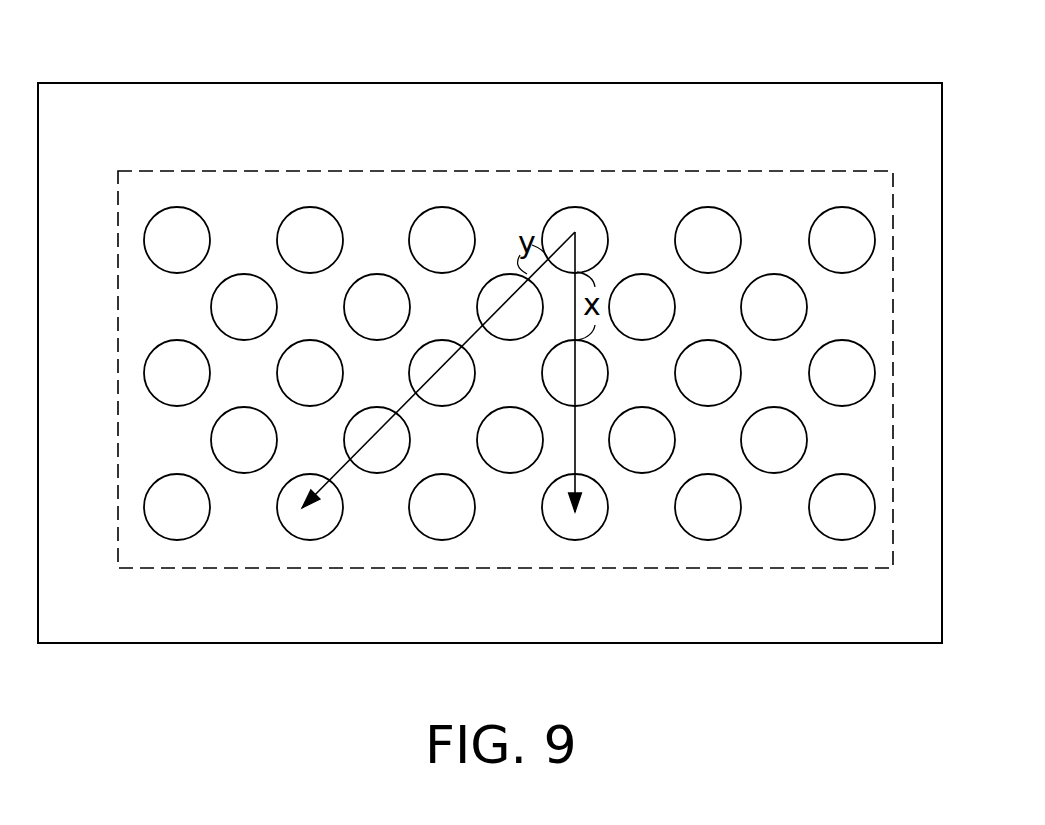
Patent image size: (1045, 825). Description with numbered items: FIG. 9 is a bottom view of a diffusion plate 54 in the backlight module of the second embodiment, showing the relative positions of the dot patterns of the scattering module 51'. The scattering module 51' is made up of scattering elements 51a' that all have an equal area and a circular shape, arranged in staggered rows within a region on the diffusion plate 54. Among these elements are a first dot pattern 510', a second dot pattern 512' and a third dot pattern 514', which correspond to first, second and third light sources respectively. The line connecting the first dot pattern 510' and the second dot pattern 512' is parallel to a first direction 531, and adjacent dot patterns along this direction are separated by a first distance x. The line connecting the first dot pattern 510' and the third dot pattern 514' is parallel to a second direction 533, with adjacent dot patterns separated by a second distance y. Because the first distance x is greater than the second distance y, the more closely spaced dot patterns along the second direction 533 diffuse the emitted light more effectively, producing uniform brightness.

The diffusion plate 54 is at (607, 83).
The scattering module 51' is at (505, 346).
The scattering elements 51a' is at (473, 328).
The first dot pattern 510' is at (613, 199).
The third dot pattern 514' is at (480, 307).
The second dot pattern 512' is at (610, 373).
The first direction 531 is at (572, 447).
The second direction 533 is at (345, 472).